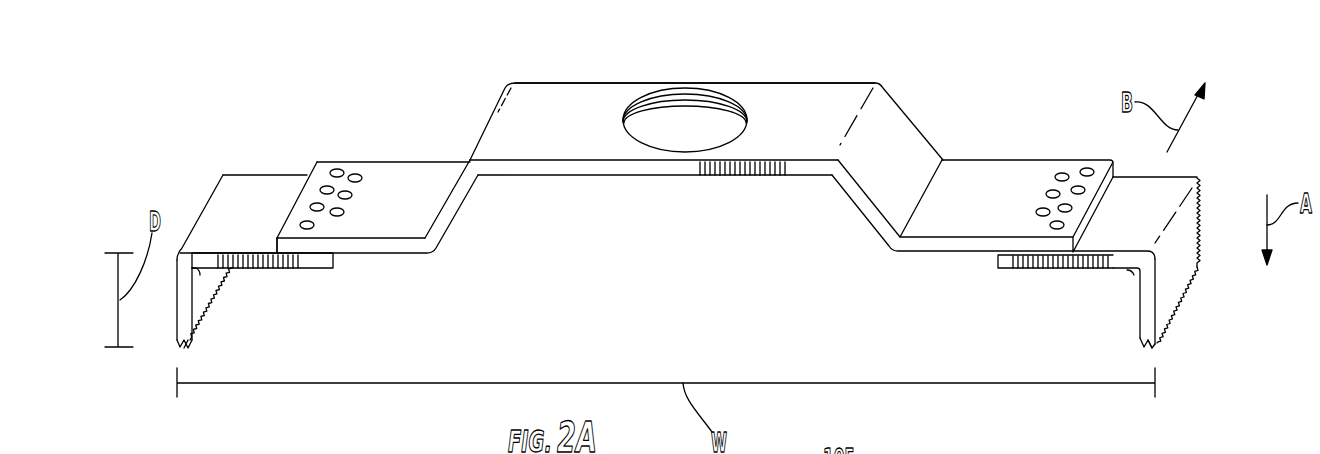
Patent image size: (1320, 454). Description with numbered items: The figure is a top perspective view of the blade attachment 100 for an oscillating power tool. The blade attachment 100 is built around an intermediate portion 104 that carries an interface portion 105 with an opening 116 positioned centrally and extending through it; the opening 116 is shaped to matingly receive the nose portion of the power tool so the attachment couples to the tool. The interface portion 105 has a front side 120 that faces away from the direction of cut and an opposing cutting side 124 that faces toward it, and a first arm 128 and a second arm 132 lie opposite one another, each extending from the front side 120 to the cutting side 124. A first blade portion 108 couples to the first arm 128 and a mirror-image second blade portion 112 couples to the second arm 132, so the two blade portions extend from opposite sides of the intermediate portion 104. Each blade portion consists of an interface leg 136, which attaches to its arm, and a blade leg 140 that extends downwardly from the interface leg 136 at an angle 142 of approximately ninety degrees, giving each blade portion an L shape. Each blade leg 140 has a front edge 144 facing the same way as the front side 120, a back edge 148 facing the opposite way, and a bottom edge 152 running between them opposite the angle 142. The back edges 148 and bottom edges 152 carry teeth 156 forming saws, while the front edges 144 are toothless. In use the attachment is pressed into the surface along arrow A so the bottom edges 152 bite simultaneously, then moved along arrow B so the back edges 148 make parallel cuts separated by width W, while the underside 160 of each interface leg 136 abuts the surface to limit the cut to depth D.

The blade attachment 100 is at (686, 215).
The intermediate portion 104 is at (905, 143).
The interface portion 105 is at (810, 92).
The first blade portion 108 is at (1180, 293).
The second blade portion 112 is at (268, 237).
The opening 116 is at (683, 90).
The front side 120 is at (609, 167).
The cutting side 124 is at (805, 82).
The first arm 128 is at (977, 175).
The second arm 132 is at (419, 172).
The interface leg 136 is at (258, 195).
The blade leg 140 is at (210, 298).
The angle 142 is at (200, 275).
The front edge 144 is at (182, 318).
The back edge 148 is at (301, 175).
The bottom edge 152 is at (200, 337).
The teeth 156 is at (197, 345).
The underside 160 is at (283, 267).